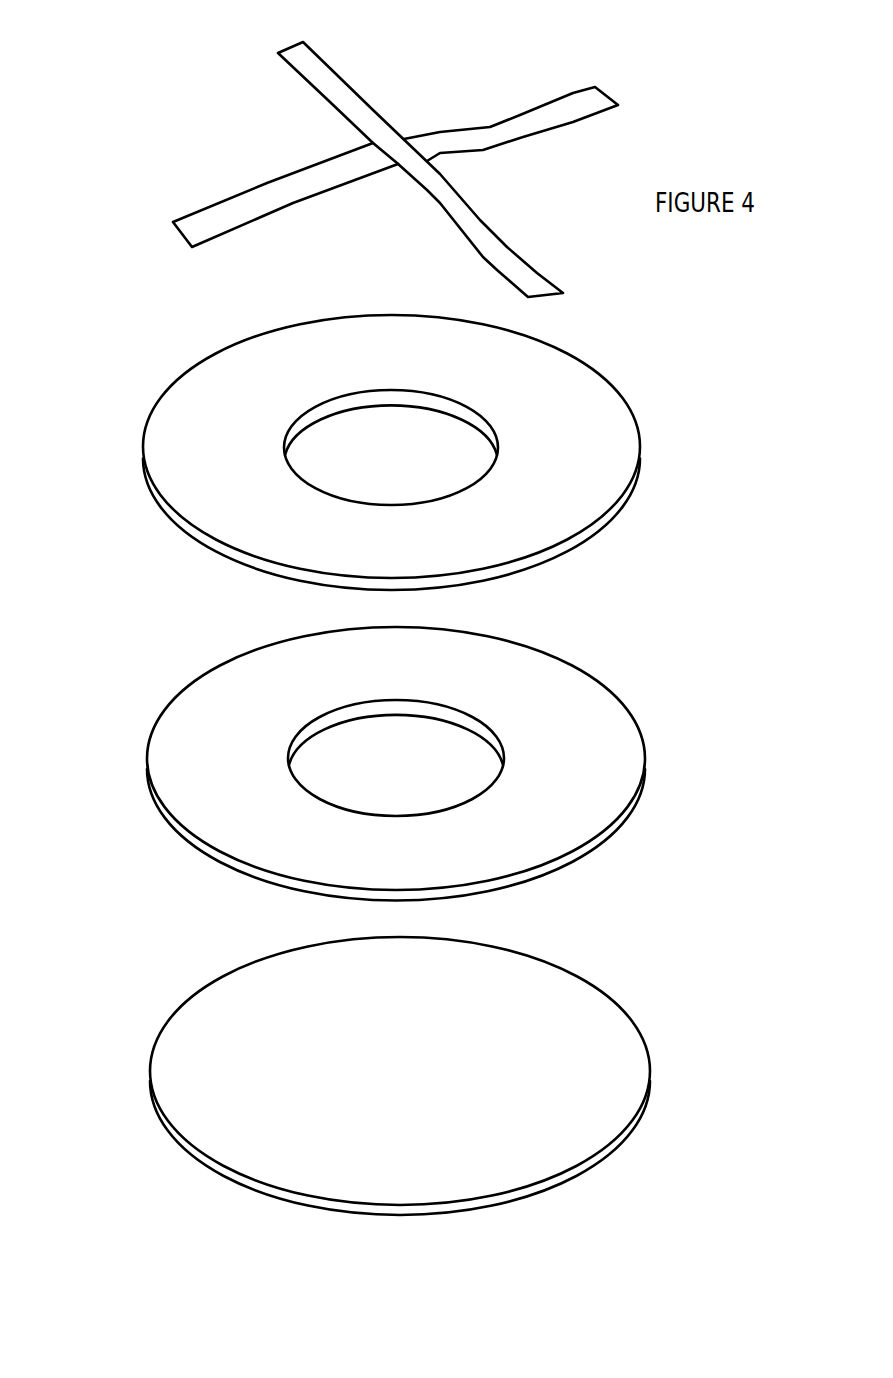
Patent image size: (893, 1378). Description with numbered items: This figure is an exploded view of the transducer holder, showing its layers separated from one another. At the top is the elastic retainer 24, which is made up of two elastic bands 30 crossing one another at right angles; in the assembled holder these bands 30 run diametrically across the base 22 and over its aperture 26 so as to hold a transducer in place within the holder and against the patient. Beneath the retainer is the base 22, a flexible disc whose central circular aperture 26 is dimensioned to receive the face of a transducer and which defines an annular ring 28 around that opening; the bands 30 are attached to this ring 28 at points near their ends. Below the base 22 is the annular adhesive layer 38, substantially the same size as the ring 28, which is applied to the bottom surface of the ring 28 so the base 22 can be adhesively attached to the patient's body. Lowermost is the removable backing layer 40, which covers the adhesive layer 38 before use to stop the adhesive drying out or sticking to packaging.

The elastic retainer 24 is at (200, 153).
The elastic bands 30 is at (440, 137).
The base 22 is at (112, 438).
The circular aperture 26 is at (470, 440).
The annular ring 28 is at (622, 449).
The adhesive layer 38 is at (623, 760).
The removable backing layer 40 is at (630, 1066).